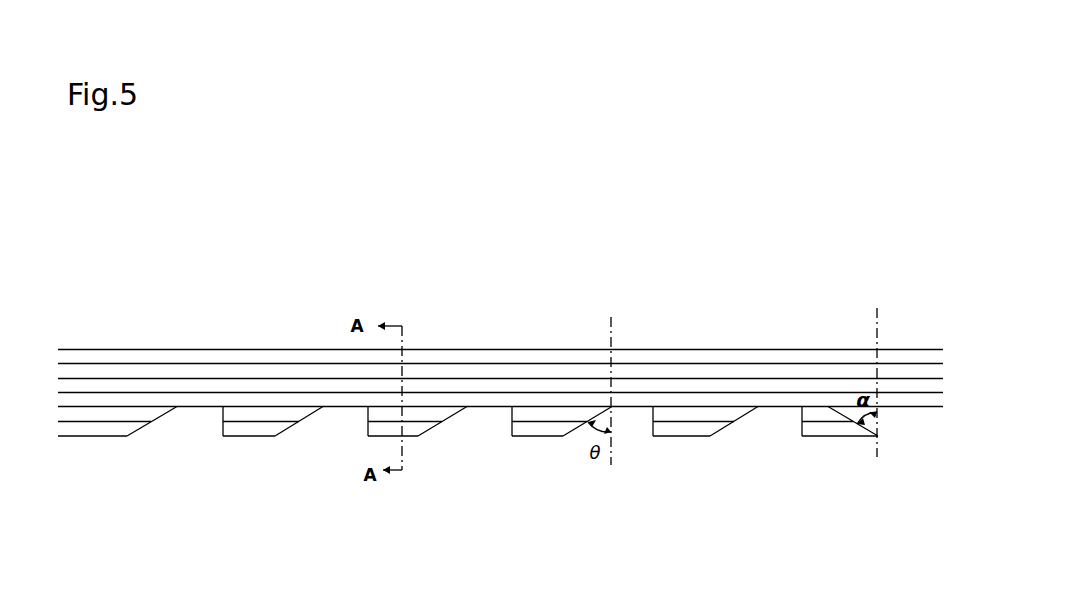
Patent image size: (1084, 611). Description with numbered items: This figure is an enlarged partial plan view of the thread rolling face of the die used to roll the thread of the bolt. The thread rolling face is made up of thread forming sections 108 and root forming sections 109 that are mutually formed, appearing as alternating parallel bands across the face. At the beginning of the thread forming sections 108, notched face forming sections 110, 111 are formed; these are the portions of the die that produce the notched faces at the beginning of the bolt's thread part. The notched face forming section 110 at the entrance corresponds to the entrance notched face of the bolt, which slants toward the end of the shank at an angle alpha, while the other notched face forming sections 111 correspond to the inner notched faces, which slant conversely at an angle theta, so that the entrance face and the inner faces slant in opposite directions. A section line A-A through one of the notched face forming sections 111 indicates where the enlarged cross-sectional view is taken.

The thread forming section 108 is at (253, 378).
The root forming section 109 is at (553, 392).
The notched face forming section 110 is at (876, 427).
The notched face forming section 111 is at (300, 420).